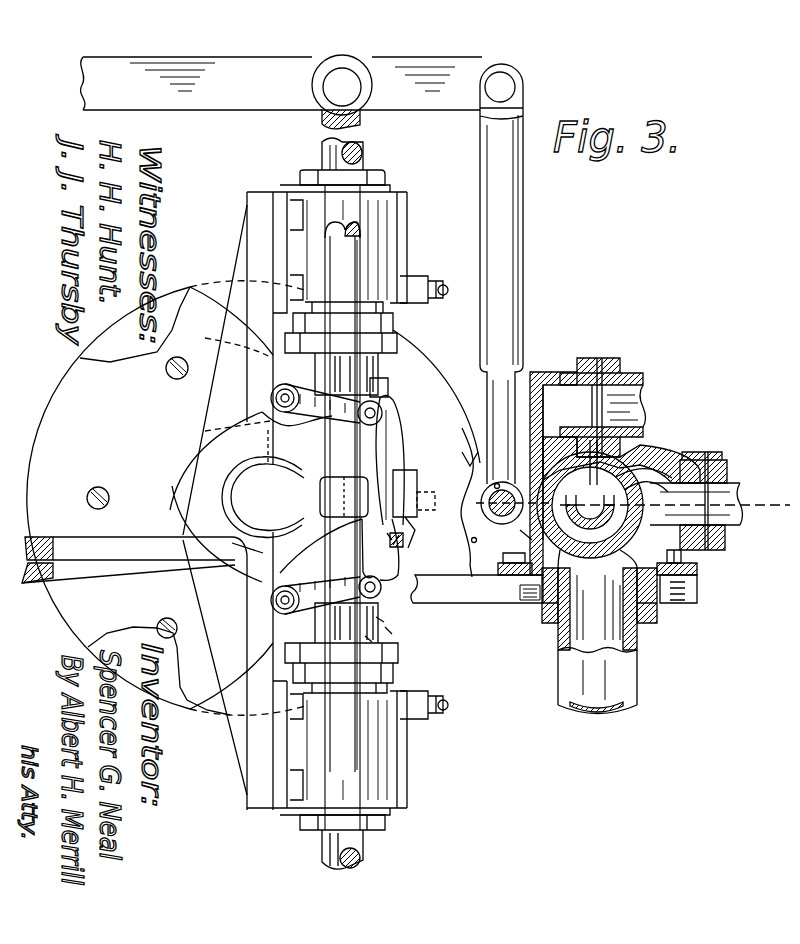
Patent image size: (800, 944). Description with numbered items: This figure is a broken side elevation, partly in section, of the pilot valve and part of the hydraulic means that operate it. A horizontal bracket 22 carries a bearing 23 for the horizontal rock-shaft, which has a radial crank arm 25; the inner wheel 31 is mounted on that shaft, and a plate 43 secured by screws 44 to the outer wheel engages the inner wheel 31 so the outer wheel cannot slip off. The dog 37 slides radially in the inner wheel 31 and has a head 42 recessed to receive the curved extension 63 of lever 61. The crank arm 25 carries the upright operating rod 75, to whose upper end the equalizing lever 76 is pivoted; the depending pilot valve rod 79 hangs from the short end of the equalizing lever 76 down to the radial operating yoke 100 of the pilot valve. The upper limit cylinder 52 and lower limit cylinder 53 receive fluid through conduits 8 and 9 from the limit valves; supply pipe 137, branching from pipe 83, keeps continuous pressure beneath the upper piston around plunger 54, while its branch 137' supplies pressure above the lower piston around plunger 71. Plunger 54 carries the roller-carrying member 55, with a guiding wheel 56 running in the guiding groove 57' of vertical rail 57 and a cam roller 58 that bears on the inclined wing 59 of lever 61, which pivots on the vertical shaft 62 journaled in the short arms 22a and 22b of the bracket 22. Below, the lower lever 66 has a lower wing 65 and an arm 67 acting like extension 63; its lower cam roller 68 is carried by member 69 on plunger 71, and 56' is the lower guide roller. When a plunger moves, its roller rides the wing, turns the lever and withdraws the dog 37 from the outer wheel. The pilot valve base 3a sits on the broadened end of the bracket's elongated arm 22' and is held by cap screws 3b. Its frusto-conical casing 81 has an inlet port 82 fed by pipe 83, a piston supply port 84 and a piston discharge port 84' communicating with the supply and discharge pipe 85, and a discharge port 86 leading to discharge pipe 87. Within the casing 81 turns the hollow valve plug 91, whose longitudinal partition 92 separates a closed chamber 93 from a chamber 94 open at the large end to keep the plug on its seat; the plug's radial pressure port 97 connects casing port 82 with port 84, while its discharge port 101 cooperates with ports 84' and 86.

The equalizing lever 76 is at (236, 110).
The upright operating rod 75 is at (362, 232).
The pilot valve rod 79 is at (524, 205).
The conduit 8 is at (322, 154).
The upper limit cylinder 52 is at (407, 222).
The supply pipe 137 is at (428, 268).
The lower limit cylinder 53 is at (413, 760).
The branch pipe 137' is at (457, 707).
The conduit 9 is at (365, 846).
The plate 43 is at (88, 636).
The short horizontal arm 22a is at (200, 285).
The short horizontal arm 22b is at (228, 715).
The horizontal bracket 22 is at (129, 500).
The screws 44 is at (95, 488).
The inner wheel 31 is at (172, 504).
The bearing 23 is at (222, 480).
The crank arm 25 is at (323, 497).
The plunger 54 is at (380, 370).
The vertical shaft 62 is at (374, 607).
The guiding wheel 56 is at (234, 377).
The lower guide roller 56' is at (253, 615).
The vertical rail 57 is at (282, 499).
The guiding groove 57' is at (224, 440).
The roller-carrying member 55 is at (272, 420).
The cam roller 58 is at (384, 408).
The inclined wing 59 is at (395, 422).
The lever 61 is at (402, 458).
The broad arm or extension 63 is at (393, 471).
The lower wing 65 is at (382, 573).
The lower lever 66 is at (394, 545).
The head 42 is at (423, 527).
The discharge port 101 is at (480, 478).
The radial operating yoke 100 is at (495, 488).
The arm 67 is at (388, 534).
The lower cam roller 68 is at (377, 618).
The member 69 is at (386, 628).
The plunger 71 is at (366, 637).
The longitudinal partition 92 is at (515, 592).
The closed chamber 93 is at (540, 545).
The valve plug 91 is at (528, 592).
The piston discharge port 84' is at (504, 544).
The dog 37 is at (437, 456).
The discharge port 86 is at (548, 465).
The discharge pipe 87 is at (638, 377).
The pilot valve casing 81 is at (637, 457).
The chamber 94 is at (667, 463).
The casing inlet port 82 is at (660, 467).
The pipe 83 is at (733, 463).
The piston supply port 84 is at (732, 537).
The radial pressure port 97 is at (730, 485).
The cap screws 3b is at (683, 556).
The base 3a is at (700, 574).
The elongated horizontal arm 22' is at (692, 606).
The supply and discharge pipe 85 is at (638, 665).